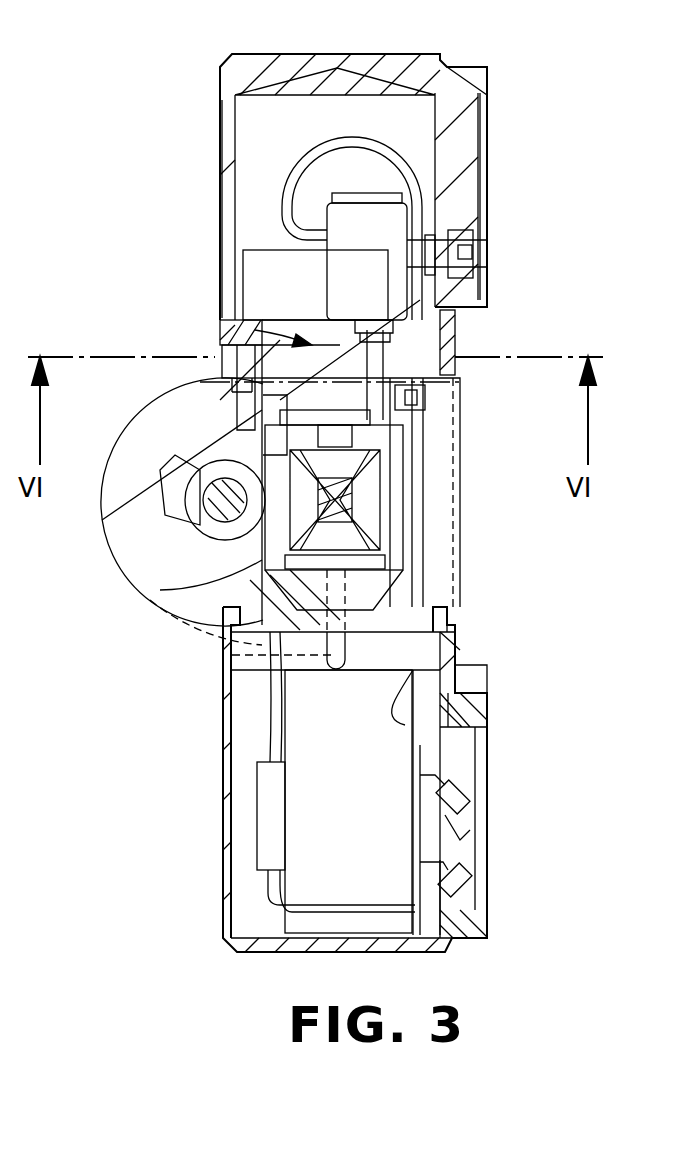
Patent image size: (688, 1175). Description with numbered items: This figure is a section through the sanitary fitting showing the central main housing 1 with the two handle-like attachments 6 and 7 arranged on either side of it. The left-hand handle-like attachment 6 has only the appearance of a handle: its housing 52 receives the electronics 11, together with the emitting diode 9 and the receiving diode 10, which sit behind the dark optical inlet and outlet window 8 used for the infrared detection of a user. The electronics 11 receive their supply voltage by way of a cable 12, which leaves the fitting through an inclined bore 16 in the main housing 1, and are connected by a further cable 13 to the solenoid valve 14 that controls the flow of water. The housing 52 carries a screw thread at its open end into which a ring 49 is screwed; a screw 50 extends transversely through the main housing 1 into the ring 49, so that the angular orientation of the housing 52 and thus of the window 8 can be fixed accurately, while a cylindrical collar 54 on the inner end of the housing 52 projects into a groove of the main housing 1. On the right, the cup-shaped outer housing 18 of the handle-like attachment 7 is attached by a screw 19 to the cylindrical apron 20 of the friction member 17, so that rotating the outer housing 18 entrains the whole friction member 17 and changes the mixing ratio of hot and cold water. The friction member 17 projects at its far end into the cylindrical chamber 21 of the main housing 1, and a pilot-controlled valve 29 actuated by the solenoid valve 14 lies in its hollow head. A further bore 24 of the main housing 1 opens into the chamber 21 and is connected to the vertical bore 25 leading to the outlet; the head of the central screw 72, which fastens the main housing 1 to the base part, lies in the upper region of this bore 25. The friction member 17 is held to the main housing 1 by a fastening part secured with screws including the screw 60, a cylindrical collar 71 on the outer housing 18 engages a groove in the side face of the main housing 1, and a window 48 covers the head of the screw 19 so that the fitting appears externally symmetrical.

The main housing 1 is at (128, 582).
The handle-like attachment 6 is at (212, 955).
The handle-like attachment 7 is at (222, 84).
The optical inlet and outlet window 8 is at (480, 790).
The emitting diode 9 is at (465, 800).
The receiving diode 10 is at (468, 878).
The electronics 11 is at (366, 848).
The cable 12 is at (268, 740).
The cable 13 is at (330, 140).
The solenoid valve 14 is at (385, 218).
The inclined bore 16 is at (190, 625).
The friction member 17 is at (224, 338).
The outer housing 18 is at (220, 165).
The screw 19 is at (452, 258).
The cylindrical apron 20 is at (242, 282).
The cylindrical chamber 21 is at (404, 492).
The bore 24 is at (232, 438).
The vertical bore 25 is at (192, 512).
The pilot-controlled valve 29 is at (405, 380).
The window 48 is at (488, 203).
The ring 49 is at (435, 648).
The screw 50 is at (232, 655).
The housing 52 is at (225, 905).
The cylindrical collar 54 is at (455, 672).
The screw 60 is at (228, 372).
The cylindrical collar 71 is at (450, 345).
The central screw 72 is at (185, 488).